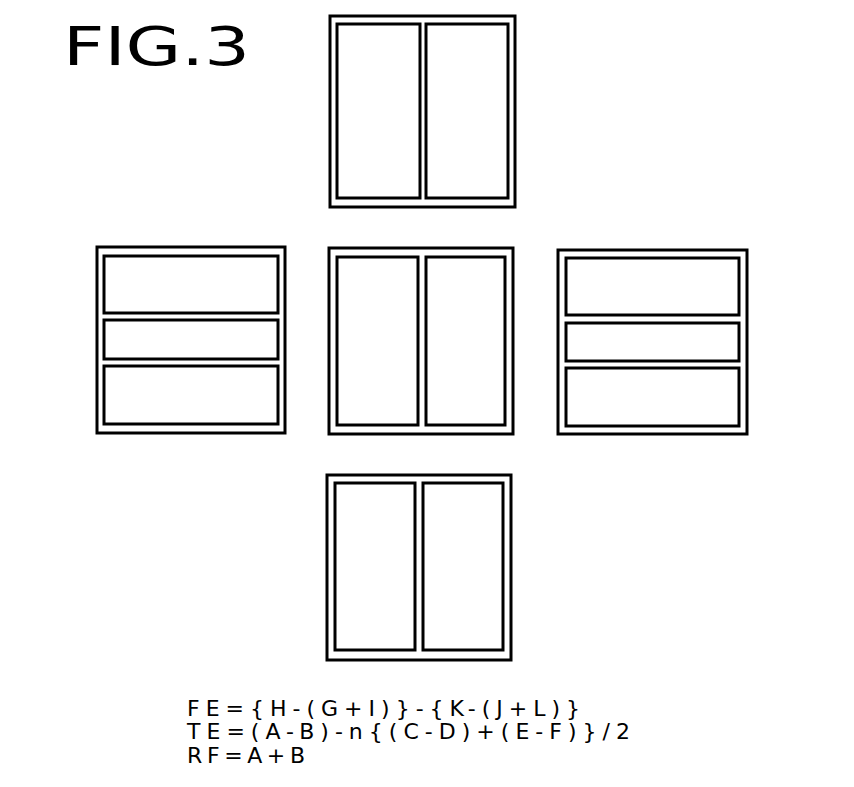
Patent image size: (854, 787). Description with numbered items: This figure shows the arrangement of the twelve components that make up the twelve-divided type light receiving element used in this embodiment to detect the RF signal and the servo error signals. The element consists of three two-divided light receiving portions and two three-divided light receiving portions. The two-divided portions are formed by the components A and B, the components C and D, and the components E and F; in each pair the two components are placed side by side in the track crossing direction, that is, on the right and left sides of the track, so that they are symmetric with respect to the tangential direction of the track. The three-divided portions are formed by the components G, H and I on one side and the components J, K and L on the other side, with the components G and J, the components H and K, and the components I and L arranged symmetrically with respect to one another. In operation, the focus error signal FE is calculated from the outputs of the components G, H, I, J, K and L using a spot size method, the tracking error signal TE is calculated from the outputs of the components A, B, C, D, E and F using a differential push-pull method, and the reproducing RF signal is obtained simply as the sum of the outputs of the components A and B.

The light receiving component A is at (465, 341).
The light receiving component B is at (377, 341).
The light receiving component C is at (467, 111).
The light receiving component D is at (378, 111).
The light receiving component E is at (463, 566).
The light receiving component F is at (375, 566).
The light receiving component G is at (652, 286).
The light receiving component H is at (652, 342).
The light receiving component I is at (652, 397).
The light receiving component J is at (191, 284).
The light receiving component K is at (191, 339).
The light receiving component L is at (191, 395).